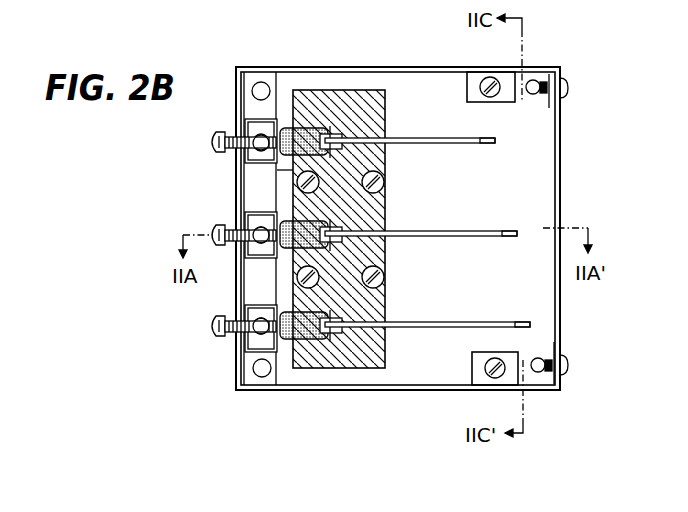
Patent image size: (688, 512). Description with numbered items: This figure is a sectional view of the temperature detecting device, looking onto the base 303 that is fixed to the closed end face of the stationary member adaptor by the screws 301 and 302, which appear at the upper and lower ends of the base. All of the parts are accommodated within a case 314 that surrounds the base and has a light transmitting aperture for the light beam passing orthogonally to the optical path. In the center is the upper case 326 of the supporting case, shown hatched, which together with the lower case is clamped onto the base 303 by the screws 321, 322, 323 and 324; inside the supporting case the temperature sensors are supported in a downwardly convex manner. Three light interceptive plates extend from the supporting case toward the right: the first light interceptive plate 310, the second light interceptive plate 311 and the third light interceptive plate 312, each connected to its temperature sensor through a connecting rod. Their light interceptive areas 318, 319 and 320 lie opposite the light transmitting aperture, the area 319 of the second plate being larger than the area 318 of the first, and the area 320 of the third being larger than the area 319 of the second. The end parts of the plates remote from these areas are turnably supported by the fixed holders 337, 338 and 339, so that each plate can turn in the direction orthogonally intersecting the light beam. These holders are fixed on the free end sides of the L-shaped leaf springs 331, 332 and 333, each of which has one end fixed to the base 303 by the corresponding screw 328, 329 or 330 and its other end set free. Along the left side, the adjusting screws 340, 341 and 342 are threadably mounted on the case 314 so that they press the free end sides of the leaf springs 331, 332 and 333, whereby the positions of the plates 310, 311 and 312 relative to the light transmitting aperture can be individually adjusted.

The screw 301 is at (477, 75).
The screw 302 is at (474, 368).
The base 303 is at (543, 151).
The first light interceptive plate 310 is at (450, 143).
The second light interceptive plate 311 is at (455, 236).
The third light interceptive plate 312 is at (452, 328).
The case 314 is at (407, 67).
The light interceptive area 318 is at (492, 143).
The light interceptive area 319 is at (505, 230).
The light interceptive area 320 is at (505, 321).
The screw 321 is at (292, 176).
The screw 322 is at (384, 183).
The screw 323 is at (300, 270).
The screw 324 is at (384, 278).
The upper case 326 is at (340, 90).
The screw 328 is at (256, 125).
The screw 329 is at (277, 214).
The screw 330 is at (262, 305).
The L-shaped leaf spring 331 is at (277, 118).
The L-shaped leaf spring 332 is at (276, 178).
The L-shaped leaf spring 333 is at (300, 316).
The fixed holder 337 is at (300, 172).
The fixed holder 338 is at (300, 222).
The fixed holder 339 is at (283, 340).
The adjusting screw 340 is at (213, 141).
The adjusting screw 341 is at (207, 233).
The adjusting screw 342 is at (209, 326).